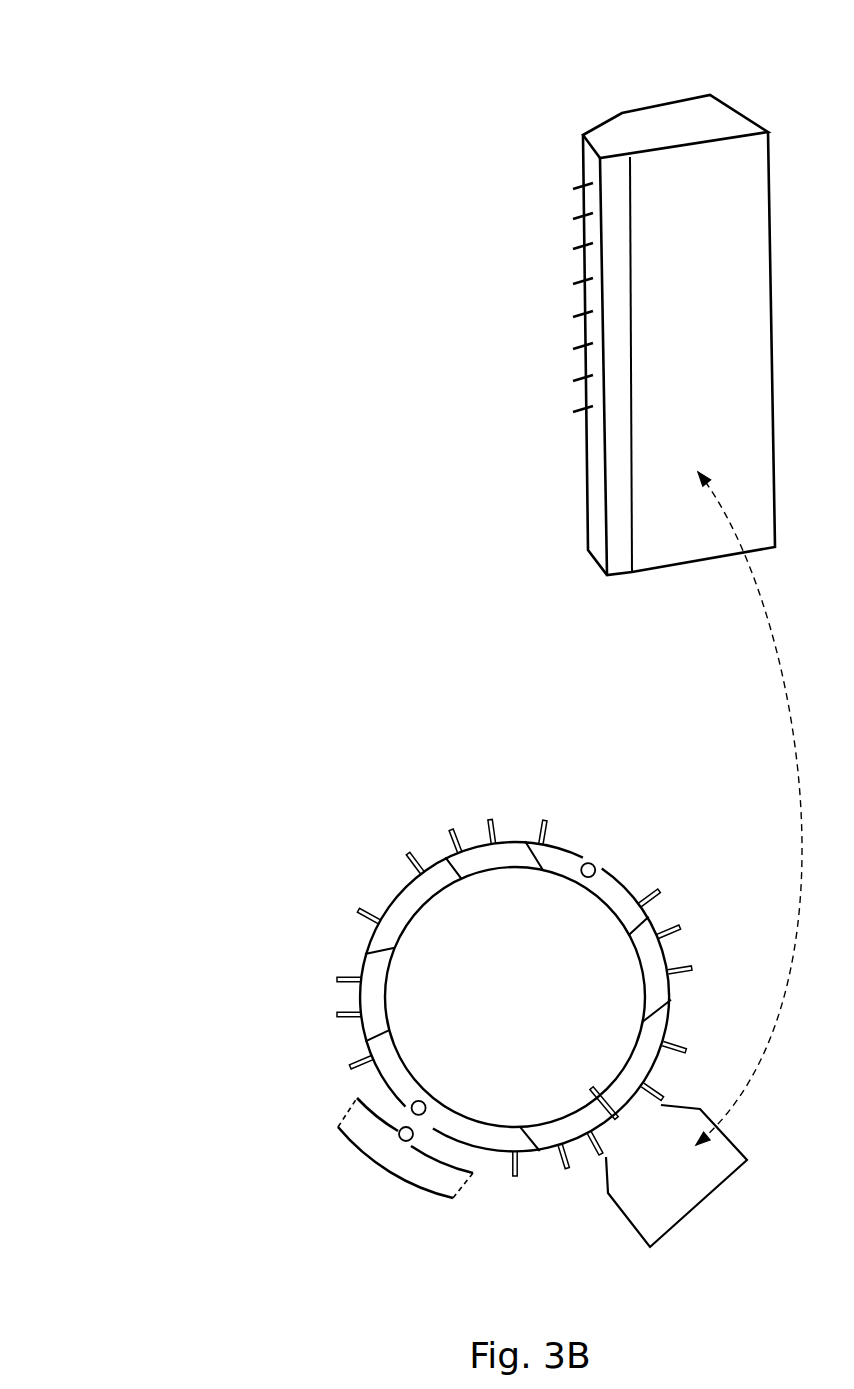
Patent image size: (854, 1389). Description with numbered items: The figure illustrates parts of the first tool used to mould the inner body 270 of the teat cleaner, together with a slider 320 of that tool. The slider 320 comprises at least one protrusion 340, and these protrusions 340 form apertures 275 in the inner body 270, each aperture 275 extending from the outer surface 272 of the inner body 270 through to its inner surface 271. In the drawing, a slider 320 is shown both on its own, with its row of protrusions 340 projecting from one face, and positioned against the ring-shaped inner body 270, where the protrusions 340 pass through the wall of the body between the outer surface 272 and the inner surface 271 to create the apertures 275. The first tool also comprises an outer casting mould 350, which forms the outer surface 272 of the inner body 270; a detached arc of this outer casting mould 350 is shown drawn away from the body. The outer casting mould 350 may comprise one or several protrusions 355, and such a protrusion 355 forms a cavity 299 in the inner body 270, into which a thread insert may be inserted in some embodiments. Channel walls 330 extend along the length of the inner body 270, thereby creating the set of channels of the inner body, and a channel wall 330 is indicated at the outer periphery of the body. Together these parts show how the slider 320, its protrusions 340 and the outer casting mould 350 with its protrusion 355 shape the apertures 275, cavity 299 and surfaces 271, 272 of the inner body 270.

The inner body 270 is at (117, 728).
The inner surface 271 is at (385, 981).
The outer surface 272 is at (366, 1031).
The aperture 275 is at (370, 940).
The cavity 299 is at (593, 866).
The slider 320 is at (668, 125).
The channel wall 330 is at (407, 853).
The protrusion 340 is at (574, 411).
The outer casting mould 350 is at (402, 1162).
The protrusion 355 is at (399, 1137).